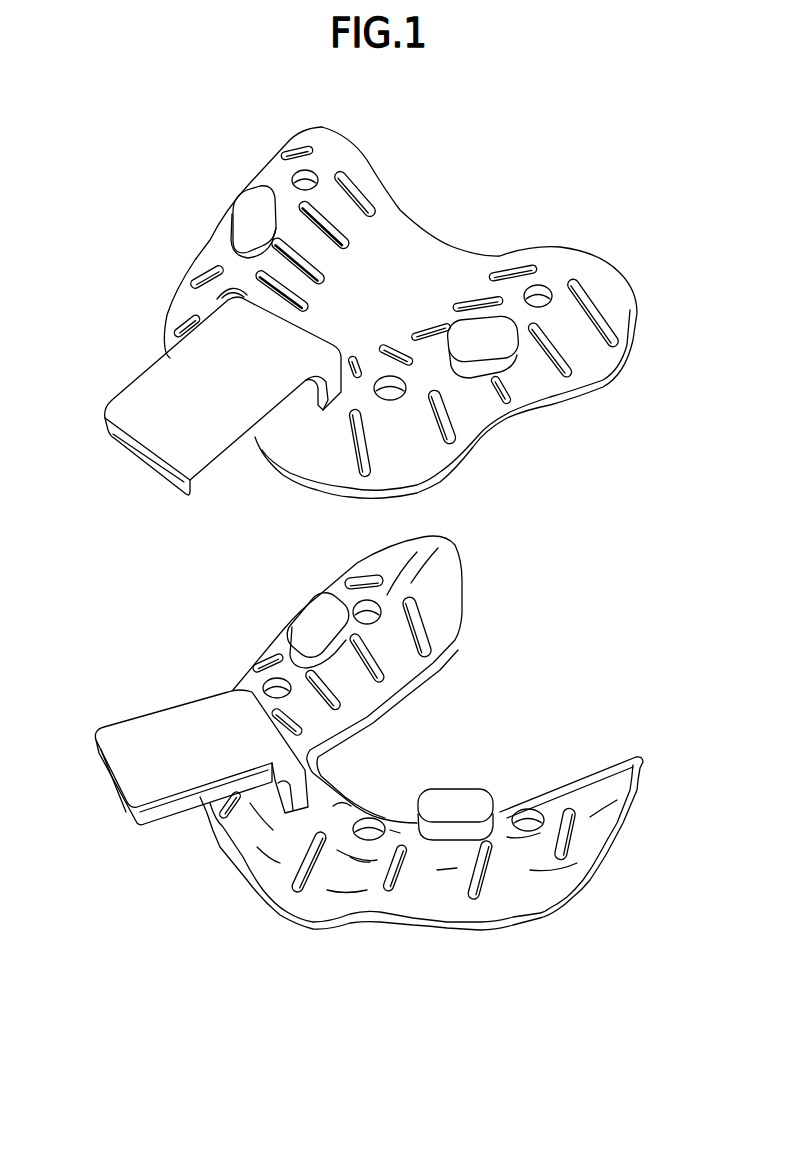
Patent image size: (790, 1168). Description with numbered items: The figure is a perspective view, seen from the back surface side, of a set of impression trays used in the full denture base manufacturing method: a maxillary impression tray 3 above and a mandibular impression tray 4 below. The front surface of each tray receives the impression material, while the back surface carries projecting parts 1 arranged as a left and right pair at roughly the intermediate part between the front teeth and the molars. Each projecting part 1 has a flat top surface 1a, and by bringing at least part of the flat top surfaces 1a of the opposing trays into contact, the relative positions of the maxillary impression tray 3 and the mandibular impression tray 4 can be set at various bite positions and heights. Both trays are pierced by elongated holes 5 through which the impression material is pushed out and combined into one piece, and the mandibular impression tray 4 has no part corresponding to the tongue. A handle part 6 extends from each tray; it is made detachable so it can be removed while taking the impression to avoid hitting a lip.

The projecting part 1 is at (240, 247).
The top surface 1a is at (248, 215).
The maxillary impression tray 3 is at (450, 185).
The mandibular impression tray 4 is at (511, 662).
The elongated hole 5 is at (358, 190).
The handle part 6 is at (145, 402).